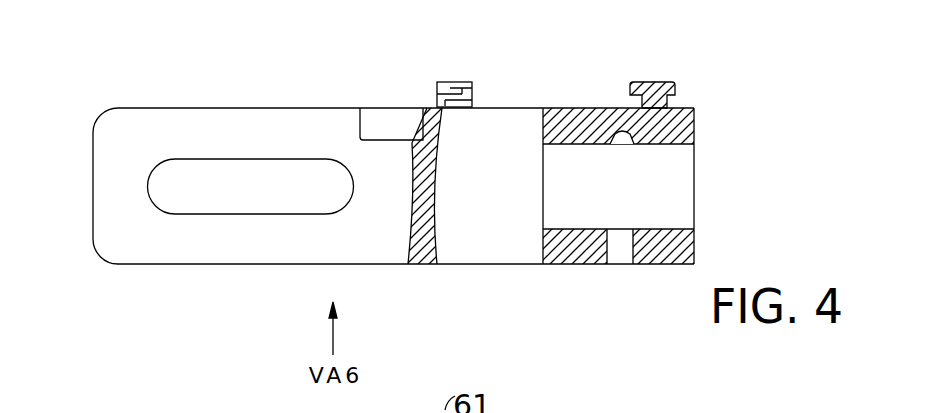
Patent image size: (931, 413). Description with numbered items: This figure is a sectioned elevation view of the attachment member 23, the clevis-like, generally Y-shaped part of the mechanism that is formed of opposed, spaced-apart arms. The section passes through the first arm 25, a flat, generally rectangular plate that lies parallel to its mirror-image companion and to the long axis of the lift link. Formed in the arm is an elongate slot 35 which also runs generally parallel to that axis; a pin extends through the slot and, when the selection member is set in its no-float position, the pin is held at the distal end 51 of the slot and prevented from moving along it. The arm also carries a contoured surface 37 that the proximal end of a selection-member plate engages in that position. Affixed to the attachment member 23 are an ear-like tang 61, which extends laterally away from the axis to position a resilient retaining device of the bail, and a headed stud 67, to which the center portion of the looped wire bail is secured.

The first arm 25 is at (113, 108).
The second slot 35 is at (260, 205).
The distal end 51 is at (147, 185).
The contoured surface 37 is at (411, 235).
The attachment member 23 is at (543, 264).
The tang 61 is at (447, 82).
The headed stud 67 is at (645, 82).